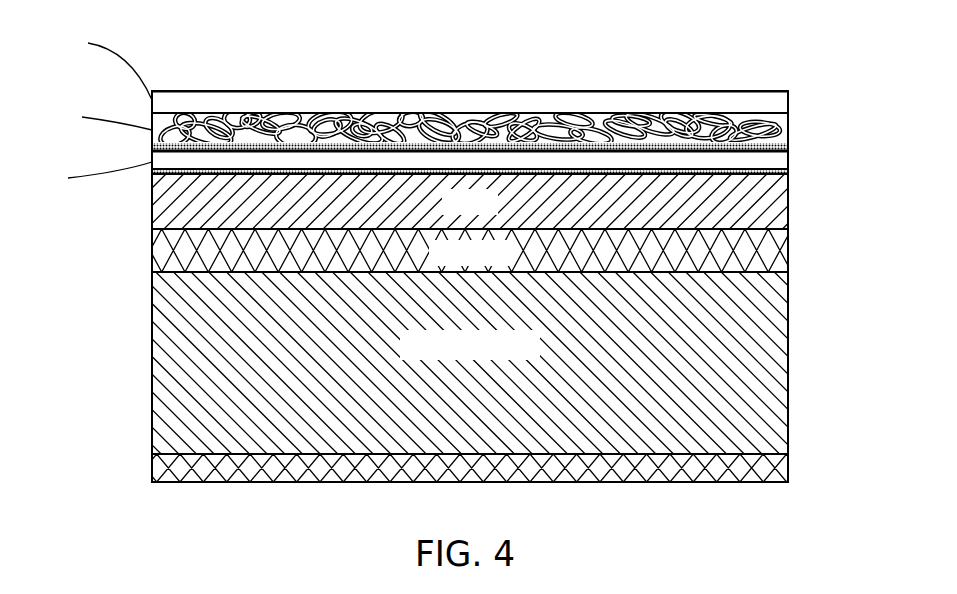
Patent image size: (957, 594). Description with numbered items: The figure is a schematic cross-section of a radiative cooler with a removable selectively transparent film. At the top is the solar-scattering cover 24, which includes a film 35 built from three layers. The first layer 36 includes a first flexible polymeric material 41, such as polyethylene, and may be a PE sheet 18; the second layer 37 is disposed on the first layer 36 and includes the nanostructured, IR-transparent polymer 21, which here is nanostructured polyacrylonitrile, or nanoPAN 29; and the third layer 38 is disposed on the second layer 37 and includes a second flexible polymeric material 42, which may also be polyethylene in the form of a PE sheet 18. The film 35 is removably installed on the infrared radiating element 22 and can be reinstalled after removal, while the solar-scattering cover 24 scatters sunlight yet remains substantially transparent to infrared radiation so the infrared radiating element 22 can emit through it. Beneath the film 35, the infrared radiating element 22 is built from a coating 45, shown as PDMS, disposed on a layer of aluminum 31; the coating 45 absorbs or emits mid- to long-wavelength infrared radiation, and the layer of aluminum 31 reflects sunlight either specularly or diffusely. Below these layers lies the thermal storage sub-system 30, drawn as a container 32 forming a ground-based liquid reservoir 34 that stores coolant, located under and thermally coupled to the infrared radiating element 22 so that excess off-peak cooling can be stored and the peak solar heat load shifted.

The PE sheet 18 is at (180, 90).
The nanostructured, IR-transparent polymer 21 is at (152, 118).
The infrared radiating element 22 is at (488, 232).
The solar-scattering cover 24 is at (847, 92).
The nanostructured polyacrylonitrile (nanoPAN) 29 is at (152, 142).
The thermal storage sub-system 30 is at (478, 377).
The layer of aluminum 31 is at (787, 248).
The container 32 is at (787, 402).
The ground-based liquid reservoir 34 is at (775, 297).
The film 35 is at (423, 125).
The first layer 36 is at (353, 153).
The second layer 37 is at (285, 117).
The third layer 38 is at (228, 98).
The first flexible polymeric material 41 is at (488, 153).
The second flexible polymeric material 42 is at (614, 91).
The coating 45 is at (783, 207).